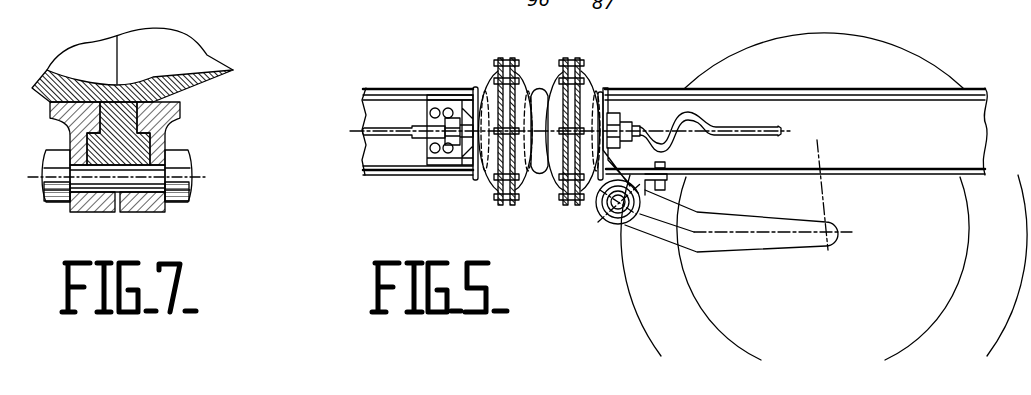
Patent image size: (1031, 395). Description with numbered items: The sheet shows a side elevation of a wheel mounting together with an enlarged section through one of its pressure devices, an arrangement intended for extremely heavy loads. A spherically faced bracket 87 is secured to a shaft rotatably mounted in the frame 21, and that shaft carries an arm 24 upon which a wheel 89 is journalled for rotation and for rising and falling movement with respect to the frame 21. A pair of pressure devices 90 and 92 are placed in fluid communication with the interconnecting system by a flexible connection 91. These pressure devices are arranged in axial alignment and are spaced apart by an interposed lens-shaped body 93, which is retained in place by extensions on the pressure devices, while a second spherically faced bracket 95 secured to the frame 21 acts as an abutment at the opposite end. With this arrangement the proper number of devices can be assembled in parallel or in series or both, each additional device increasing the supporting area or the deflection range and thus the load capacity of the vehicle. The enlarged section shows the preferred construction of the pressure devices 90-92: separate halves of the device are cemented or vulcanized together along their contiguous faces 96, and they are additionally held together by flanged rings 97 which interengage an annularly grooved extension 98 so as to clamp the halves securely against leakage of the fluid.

In FIG. 7, the pressure devices 90-92 is at (190, 38).
In FIG. 7, the contiguous faces 96 is at (120, 88).
In FIG. 7, the flanged rings 97 is at (162, 128).
In FIG. 7, the annularly grooved extension 98 is at (66, 142).
In FIG. 5, the flexible connection 91 is at (377, 126).
In FIG. 5, the spherically faced bracket 95 is at (450, 110).
In FIG. 5, the pressure device 92 is at (486, 86).
In FIG. 5, the lens-shaped body 93 is at (540, 86).
In FIG. 5, the pressure device 90 is at (583, 80).
In FIG. 5, the spherically faced bracket 87 is at (613, 88).
In FIG. 5, the frame 21 is at (902, 92).
In FIG. 5, the arm 24 is at (753, 240).
In FIG. 5, the wheel 89 is at (880, 43).